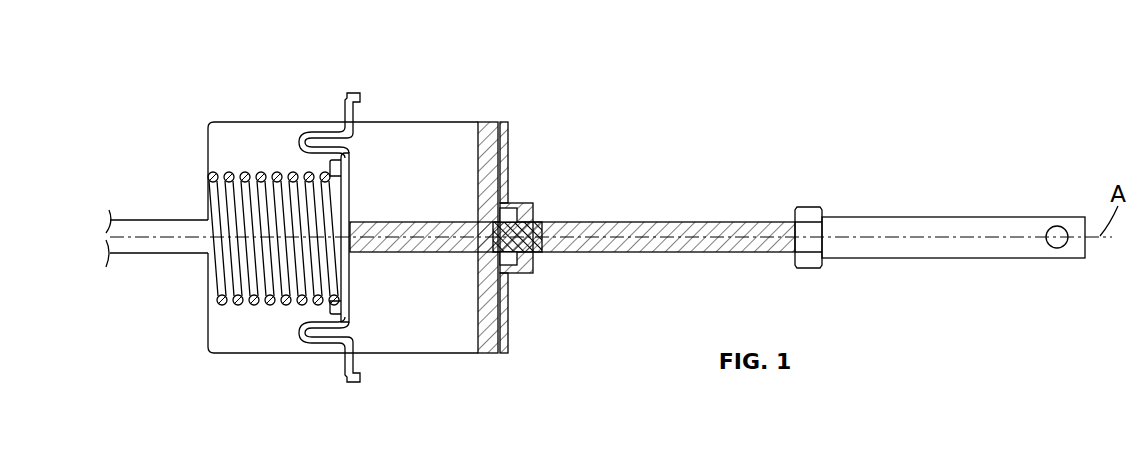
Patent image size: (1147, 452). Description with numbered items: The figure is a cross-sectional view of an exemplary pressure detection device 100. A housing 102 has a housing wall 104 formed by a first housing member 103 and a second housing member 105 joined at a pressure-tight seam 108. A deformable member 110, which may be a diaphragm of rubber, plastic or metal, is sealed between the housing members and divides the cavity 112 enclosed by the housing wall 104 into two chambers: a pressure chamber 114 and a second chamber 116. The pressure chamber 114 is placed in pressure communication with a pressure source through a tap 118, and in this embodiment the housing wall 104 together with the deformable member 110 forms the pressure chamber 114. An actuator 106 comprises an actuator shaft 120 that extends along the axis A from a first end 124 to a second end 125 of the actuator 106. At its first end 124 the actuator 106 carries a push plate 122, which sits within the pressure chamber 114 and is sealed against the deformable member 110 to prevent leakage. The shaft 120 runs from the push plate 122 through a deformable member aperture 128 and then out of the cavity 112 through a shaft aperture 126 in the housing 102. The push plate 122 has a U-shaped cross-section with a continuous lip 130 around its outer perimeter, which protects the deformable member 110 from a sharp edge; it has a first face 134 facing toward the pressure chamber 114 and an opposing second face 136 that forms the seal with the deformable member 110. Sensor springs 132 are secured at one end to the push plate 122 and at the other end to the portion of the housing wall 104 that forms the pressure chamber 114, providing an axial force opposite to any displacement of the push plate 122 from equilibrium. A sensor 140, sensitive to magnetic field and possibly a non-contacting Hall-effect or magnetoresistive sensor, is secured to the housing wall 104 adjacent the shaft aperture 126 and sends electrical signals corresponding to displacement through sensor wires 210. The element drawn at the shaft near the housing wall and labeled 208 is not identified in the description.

The pressure detection device 100 is at (112, 70).
The housing 102 is at (384, 353).
The first housing member 103 is at (238, 122).
The housing wall 104 is at (304, 357).
The second housing member 105 is at (463, 122).
The actuator 106 is at (408, 222).
The pressure-tight seam 108 is at (346, 94).
The deformable member 110 is at (313, 310).
The cavity 112 is at (243, 210).
The pressure chamber 114 is at (221, 297).
The second chamber 116 is at (450, 333).
The tap 118 is at (108, 222).
The actuator shaft 120 is at (733, 225).
The push plate 122 is at (245, 275).
The first end 124 is at (385, 226).
The second end 125 is at (1015, 217).
The shaft aperture 126 is at (490, 255).
The deformable member aperture 128 is at (360, 224).
The lip 130 is at (323, 172).
The sensor springs 132 is at (247, 172).
The first face 134 is at (278, 302).
The second face 136 is at (350, 313).
The sensor 140 is at (508, 211).
The seal 208 is at (542, 230).
The sensor wires 210 is at (500, 118).